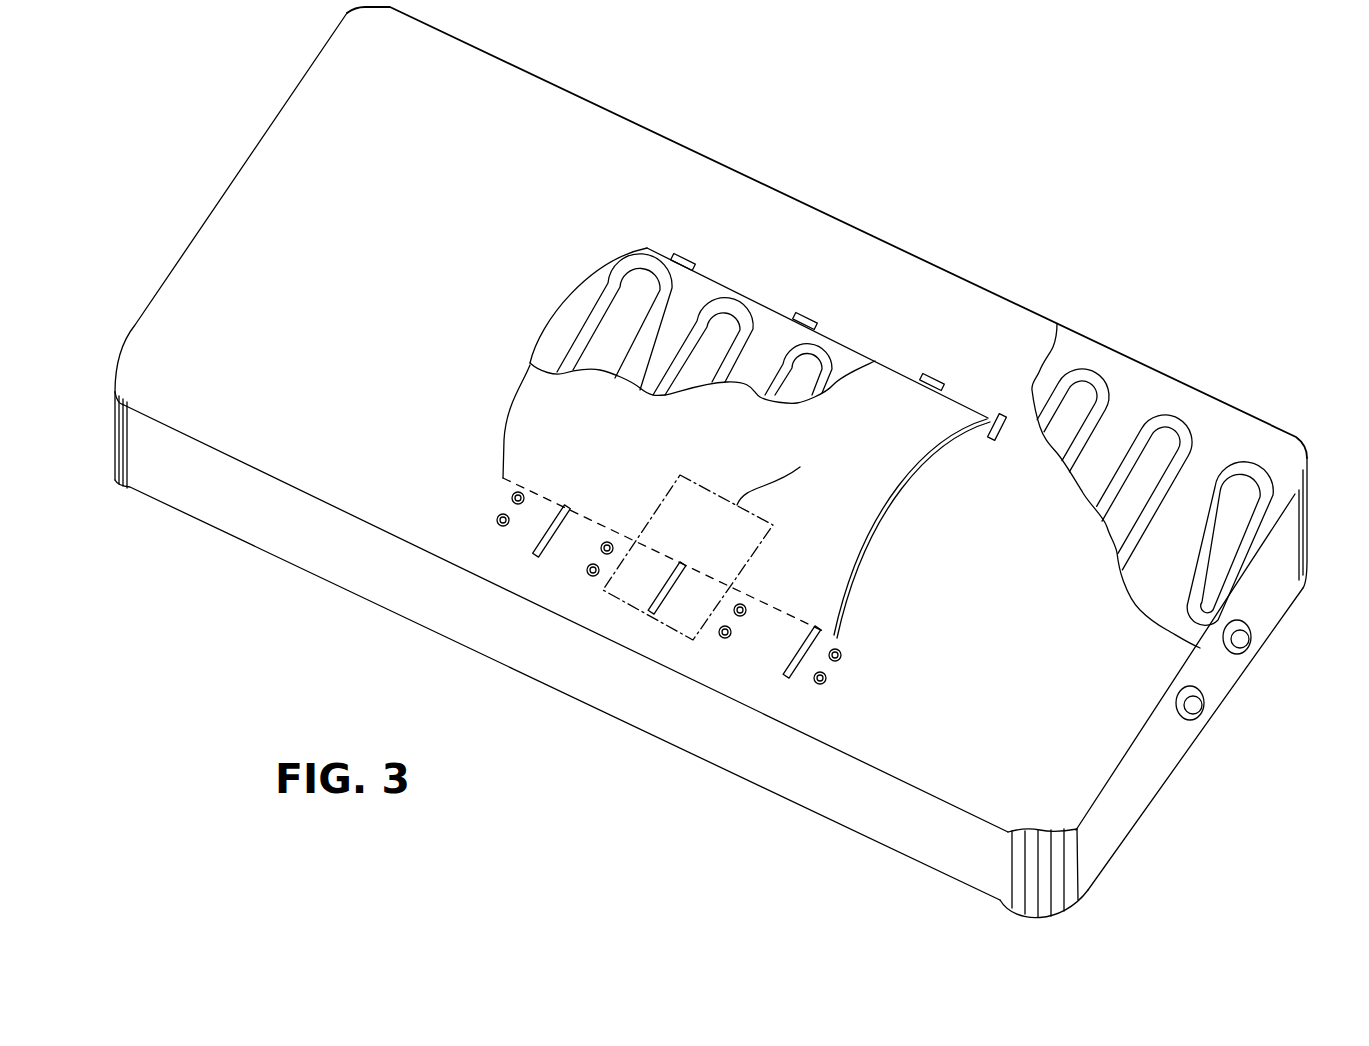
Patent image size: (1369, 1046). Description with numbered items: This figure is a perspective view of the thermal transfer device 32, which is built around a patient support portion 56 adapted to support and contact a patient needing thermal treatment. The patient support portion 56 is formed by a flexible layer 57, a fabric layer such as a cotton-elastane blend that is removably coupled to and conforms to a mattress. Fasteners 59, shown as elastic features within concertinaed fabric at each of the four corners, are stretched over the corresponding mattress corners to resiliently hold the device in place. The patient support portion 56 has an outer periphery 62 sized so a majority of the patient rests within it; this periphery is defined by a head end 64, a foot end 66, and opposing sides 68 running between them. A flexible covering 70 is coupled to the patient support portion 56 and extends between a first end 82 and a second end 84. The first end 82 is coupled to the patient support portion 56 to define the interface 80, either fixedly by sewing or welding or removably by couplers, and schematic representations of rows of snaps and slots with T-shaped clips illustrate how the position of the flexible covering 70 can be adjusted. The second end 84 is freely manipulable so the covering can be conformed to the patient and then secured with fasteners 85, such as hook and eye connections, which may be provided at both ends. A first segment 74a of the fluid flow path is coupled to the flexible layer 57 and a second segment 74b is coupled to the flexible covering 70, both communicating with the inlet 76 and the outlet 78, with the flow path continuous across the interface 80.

The thermal transfer device 32 is at (704, 467).
The patient support portion 56 is at (711, 419).
The flexible layer 57 is at (667, 165).
The fasteners 59 is at (113, 453).
The outer periphery 62 is at (537, 73).
The head end 64 is at (232, 173).
The foot end 66 is at (1190, 692).
The opposing sides 68 is at (805, 193).
The flexible covering 70 is at (901, 413).
The first segment 74a is at (1108, 380).
The second segment 74b is at (759, 310).
The inlet 76 is at (1190, 720).
The outlet 78 is at (1237, 654).
The interface 80 is at (777, 611).
The first end 82 is at (763, 609).
The second end 84 is at (752, 290).
The fasteners 85 is at (1003, 412).